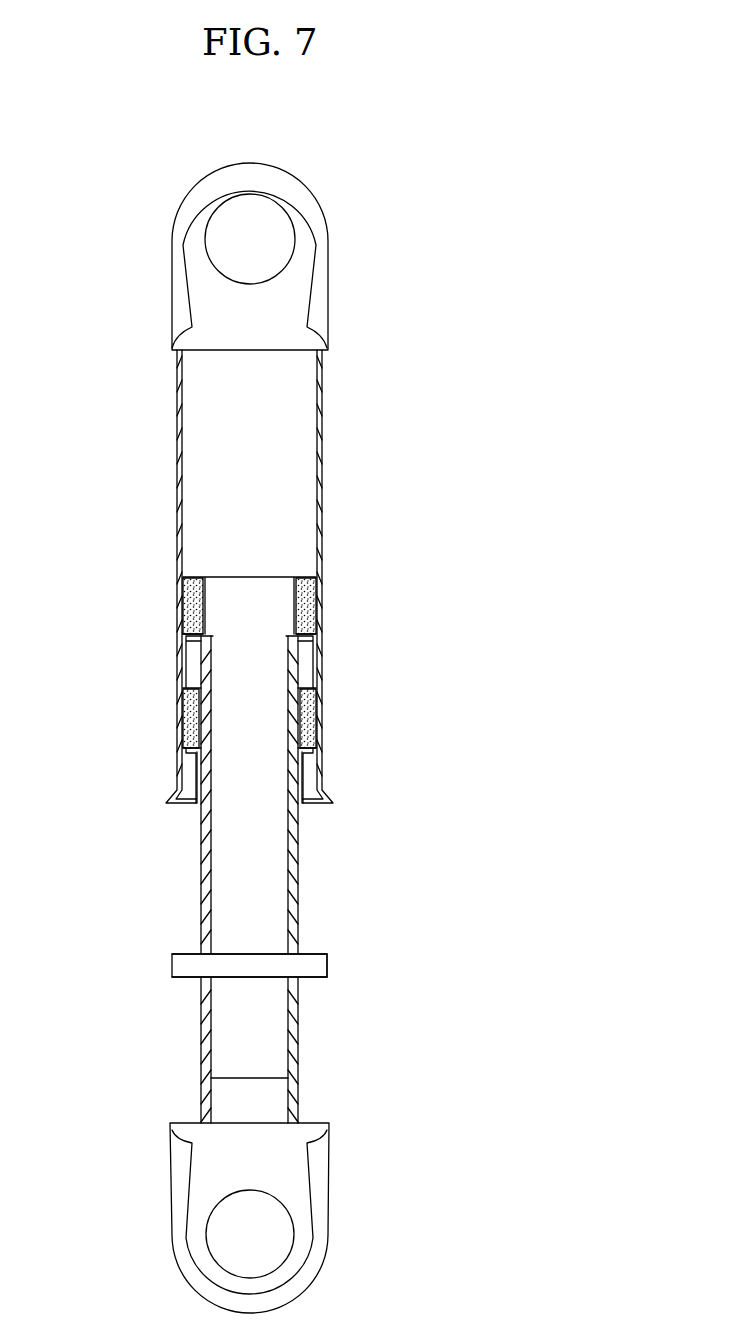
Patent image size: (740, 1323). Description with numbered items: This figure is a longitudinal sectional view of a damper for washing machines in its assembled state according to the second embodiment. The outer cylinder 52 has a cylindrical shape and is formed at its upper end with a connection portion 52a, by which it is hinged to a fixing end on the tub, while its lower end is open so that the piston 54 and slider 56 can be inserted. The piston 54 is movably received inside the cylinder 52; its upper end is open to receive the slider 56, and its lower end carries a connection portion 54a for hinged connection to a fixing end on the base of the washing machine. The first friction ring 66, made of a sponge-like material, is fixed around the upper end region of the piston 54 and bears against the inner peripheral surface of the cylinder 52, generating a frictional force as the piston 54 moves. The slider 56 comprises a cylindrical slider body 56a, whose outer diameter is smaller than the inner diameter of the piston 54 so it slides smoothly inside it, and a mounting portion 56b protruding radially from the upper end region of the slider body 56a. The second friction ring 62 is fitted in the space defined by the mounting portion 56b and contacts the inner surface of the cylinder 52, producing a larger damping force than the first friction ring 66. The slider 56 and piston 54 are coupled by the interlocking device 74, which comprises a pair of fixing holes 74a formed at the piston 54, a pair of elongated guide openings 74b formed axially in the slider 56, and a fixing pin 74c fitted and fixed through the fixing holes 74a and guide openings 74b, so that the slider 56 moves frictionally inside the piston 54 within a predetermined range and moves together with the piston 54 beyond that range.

The cylinder 52 is at (177, 433).
The connection portion 52a is at (298, 303).
The piston 54 is at (195, 1097).
The connection portion 54a is at (297, 1170).
The slider 56 is at (256, 690).
The slider body 56a is at (297, 668).
The mounting portion 56b is at (297, 613).
The second friction ring 62 is at (195, 610).
The first friction ring 66 is at (190, 722).
The interlocking device 74 is at (255, 967).
The fixing holes 74a is at (297, 951).
The elongated guide openings 74b is at (297, 983).
The fixing pin 74c is at (325, 965).